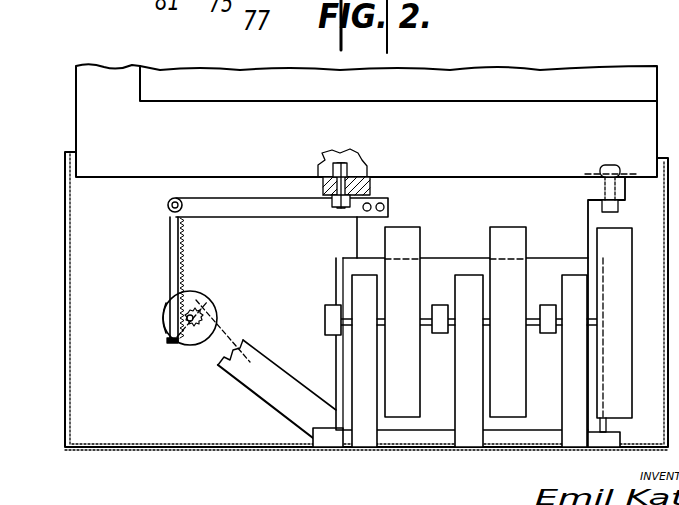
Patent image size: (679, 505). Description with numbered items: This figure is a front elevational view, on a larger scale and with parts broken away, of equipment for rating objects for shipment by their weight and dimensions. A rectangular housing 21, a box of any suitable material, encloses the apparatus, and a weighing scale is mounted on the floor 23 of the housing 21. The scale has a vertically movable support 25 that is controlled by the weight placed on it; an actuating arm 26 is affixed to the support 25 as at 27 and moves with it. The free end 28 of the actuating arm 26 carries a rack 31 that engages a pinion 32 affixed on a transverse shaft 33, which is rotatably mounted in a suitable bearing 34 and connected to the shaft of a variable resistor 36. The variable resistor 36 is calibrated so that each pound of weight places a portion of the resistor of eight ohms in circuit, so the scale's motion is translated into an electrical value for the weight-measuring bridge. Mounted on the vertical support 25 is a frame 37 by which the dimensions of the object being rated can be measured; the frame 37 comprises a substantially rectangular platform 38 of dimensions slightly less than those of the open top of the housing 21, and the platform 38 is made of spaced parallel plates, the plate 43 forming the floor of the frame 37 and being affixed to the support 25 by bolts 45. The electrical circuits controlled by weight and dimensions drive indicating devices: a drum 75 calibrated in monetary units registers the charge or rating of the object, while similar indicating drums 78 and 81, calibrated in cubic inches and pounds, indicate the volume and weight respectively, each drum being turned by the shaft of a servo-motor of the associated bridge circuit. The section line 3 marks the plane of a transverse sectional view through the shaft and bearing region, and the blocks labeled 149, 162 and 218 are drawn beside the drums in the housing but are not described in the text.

The section line 3- 3 is at (196, 188).
The housing 21 is at (336, 268).
The floor 23 is at (218, 450).
The vertically movable support 25 is at (357, 234).
The actuating arm 26 is at (263, 208).
The affixing point 27 is at (383, 205).
The free end 28 is at (168, 208).
The rack 31 is at (170, 247).
The pinion 32 is at (208, 308).
The transverse shaft 33 is at (218, 331).
The bearing 34 is at (163, 318).
The variable resistor 36 is at (197, 300).
The frame 37 is at (581, 132).
The platform 38 is at (533, 101).
The plate 43 is at (358, 165).
The bolts 45 is at (334, 165).
The drum 75 is at (610, 228).
The indicating drum 78 is at (409, 227).
The indicating drum 81 is at (507, 227).
The switch block 149 is at (325, 318).
The switch block 162 is at (440, 310).
The switch block 218 is at (546, 310).